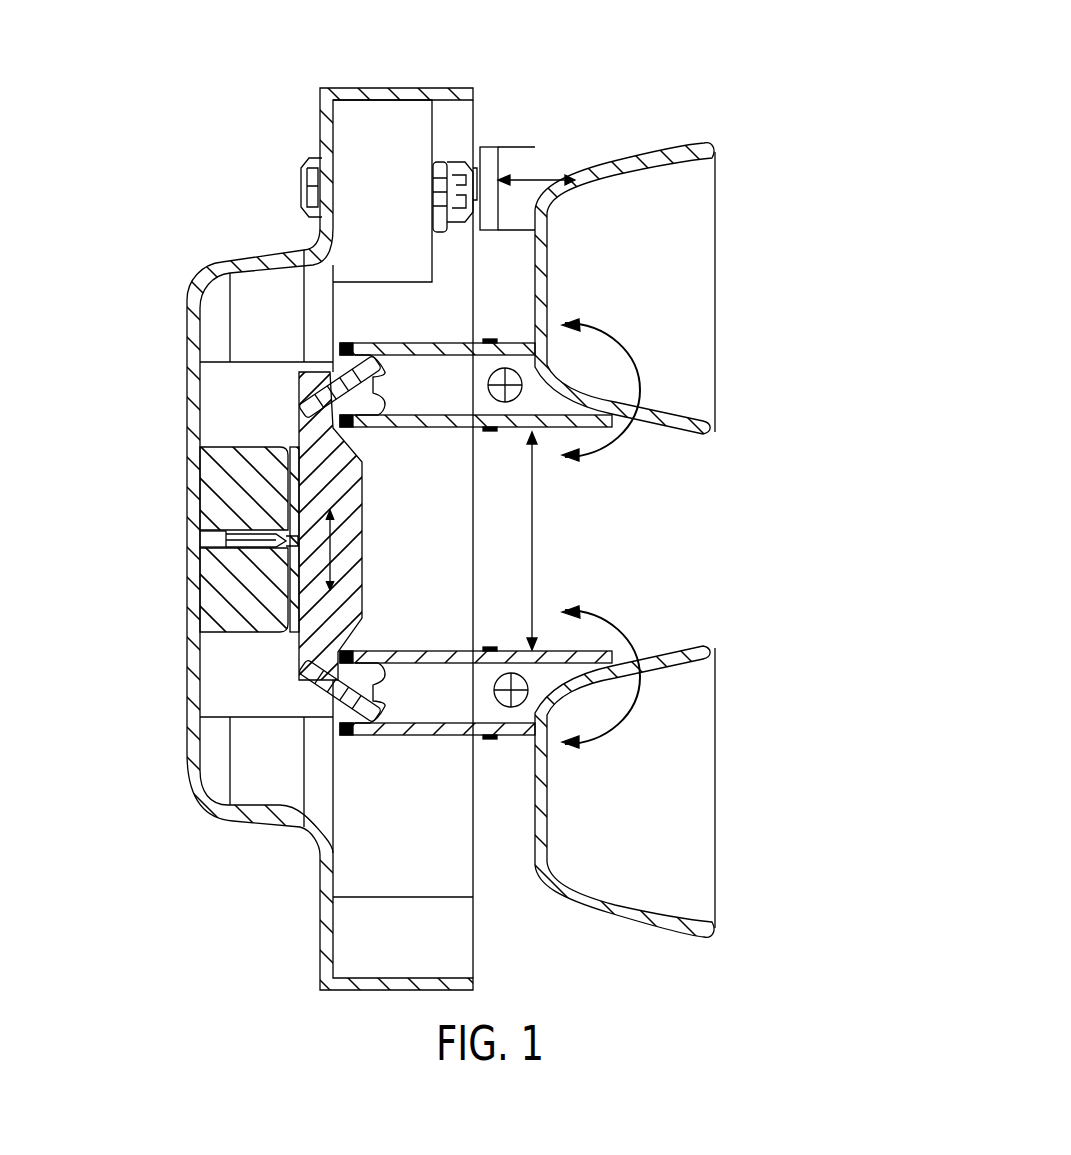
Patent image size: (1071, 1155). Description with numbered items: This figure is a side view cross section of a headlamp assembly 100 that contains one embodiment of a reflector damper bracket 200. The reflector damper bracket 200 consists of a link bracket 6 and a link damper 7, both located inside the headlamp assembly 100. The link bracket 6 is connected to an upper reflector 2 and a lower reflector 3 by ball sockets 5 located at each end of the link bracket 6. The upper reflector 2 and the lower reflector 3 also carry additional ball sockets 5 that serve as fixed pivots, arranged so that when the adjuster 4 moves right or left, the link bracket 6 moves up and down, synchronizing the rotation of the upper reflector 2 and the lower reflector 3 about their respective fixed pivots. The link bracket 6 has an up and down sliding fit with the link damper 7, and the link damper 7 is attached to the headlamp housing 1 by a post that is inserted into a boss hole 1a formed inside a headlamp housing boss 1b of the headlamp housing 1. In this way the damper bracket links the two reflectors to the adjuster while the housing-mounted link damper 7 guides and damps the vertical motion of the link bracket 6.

The headlamp assembly 100 is at (621, 82).
The headlamp housing 1 is at (192, 393).
The boss hole 1a is at (210, 533).
The headlamp housing boss 1b is at (262, 585).
The upper reflector 2 is at (697, 267).
The lower reflector 3 is at (697, 753).
The adjuster 4 is at (445, 152).
The ball sockets 5 is at (490, 152).
The link bracket 6 is at (303, 410).
The link damper 7 is at (258, 540).
The reflector damper bracket 200 is at (371, 526).